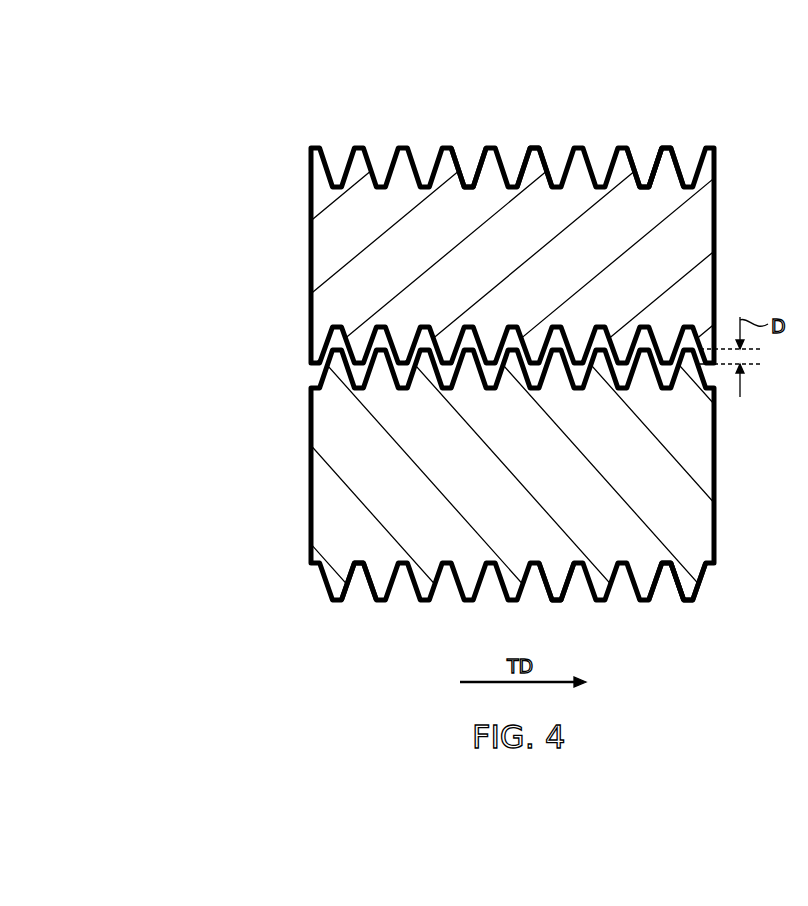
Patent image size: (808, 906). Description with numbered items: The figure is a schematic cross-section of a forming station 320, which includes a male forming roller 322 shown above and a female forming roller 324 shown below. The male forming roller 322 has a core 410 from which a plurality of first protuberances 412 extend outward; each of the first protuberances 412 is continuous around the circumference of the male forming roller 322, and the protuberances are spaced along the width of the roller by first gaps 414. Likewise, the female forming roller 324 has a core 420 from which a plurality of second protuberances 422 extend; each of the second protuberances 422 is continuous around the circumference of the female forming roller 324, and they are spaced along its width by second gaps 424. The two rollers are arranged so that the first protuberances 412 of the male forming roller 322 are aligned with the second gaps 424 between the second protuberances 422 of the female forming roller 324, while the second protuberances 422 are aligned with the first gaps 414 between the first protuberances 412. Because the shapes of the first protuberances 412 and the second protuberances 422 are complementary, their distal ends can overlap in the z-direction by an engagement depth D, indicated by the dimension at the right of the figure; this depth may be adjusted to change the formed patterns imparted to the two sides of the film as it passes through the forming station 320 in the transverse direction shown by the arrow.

The forming station 320 is at (468, 362).
The male forming roller 322 is at (311, 230).
The female forming roller 324 is at (311, 437).
The core 410 is at (469, 255).
The first protuberances 412 is at (533, 147).
The first gaps 414 is at (467, 184).
The core 420 is at (468, 475).
The second protuberances 422 is at (555, 602).
The second gaps 424 is at (358, 566).